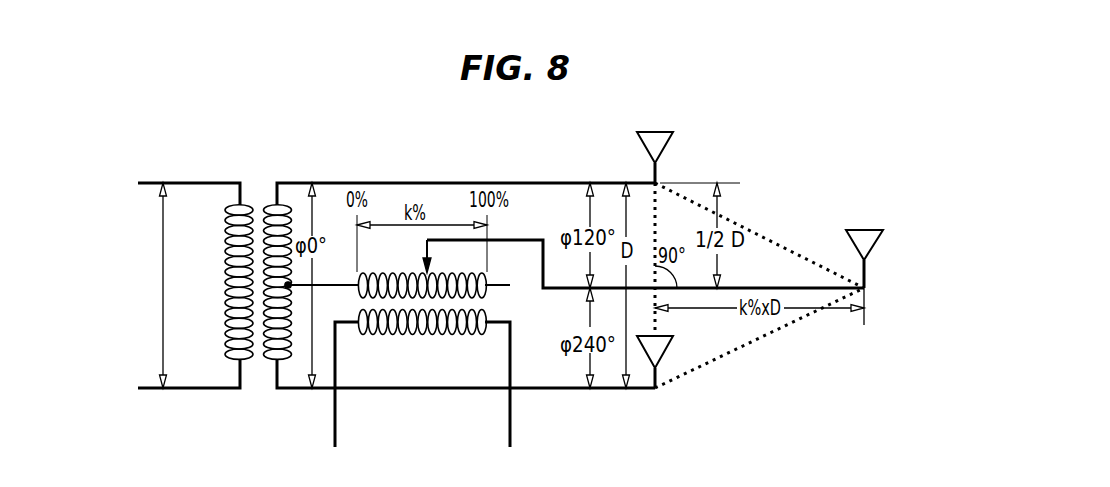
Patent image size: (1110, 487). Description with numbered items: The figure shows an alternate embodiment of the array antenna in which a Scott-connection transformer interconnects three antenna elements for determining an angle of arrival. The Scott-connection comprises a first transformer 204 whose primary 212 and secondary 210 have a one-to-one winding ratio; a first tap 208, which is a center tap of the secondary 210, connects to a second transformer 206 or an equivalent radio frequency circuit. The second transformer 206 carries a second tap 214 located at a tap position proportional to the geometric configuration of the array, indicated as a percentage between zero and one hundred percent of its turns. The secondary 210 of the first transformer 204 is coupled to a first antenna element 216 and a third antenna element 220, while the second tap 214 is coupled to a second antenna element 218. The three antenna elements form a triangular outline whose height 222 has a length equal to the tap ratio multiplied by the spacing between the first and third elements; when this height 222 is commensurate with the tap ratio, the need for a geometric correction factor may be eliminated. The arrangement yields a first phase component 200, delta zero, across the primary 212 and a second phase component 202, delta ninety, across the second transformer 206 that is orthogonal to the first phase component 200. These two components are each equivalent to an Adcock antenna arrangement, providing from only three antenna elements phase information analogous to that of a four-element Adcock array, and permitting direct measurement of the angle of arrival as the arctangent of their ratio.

The first phase component 200 is at (130, 251).
The second phase component 202 is at (408, 423).
The first transformer 204 is at (264, 205).
The second transformer 206 is at (478, 305).
The first tap 208 is at (288, 285).
The secondary 210 is at (291, 222).
The primary 212 is at (227, 229).
The second tap 214 is at (520, 240).
The first antenna element 216 is at (667, 150).
The second antenna element 218 is at (866, 230).
The third antenna element 220 is at (665, 352).
The height 222 is at (757, 328).